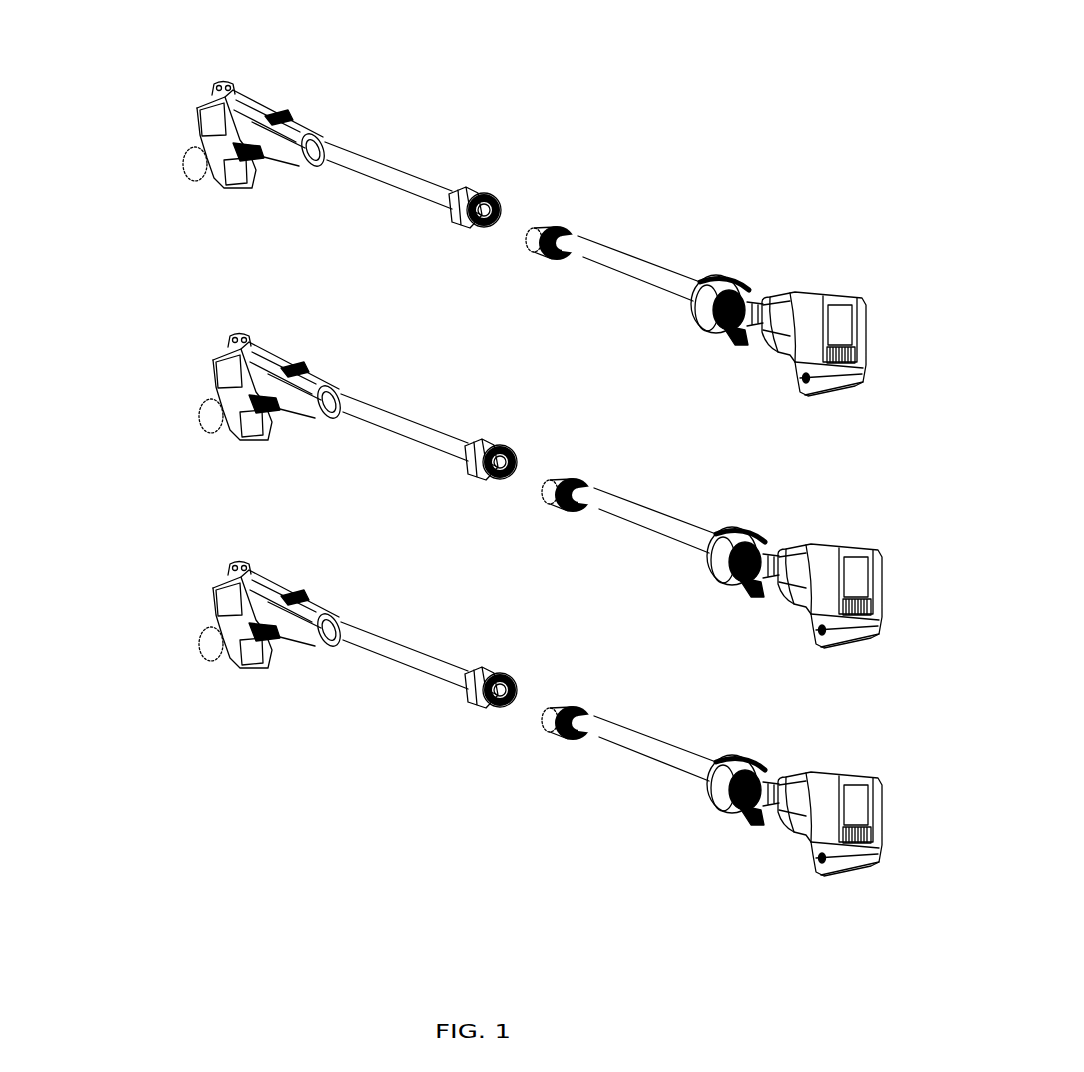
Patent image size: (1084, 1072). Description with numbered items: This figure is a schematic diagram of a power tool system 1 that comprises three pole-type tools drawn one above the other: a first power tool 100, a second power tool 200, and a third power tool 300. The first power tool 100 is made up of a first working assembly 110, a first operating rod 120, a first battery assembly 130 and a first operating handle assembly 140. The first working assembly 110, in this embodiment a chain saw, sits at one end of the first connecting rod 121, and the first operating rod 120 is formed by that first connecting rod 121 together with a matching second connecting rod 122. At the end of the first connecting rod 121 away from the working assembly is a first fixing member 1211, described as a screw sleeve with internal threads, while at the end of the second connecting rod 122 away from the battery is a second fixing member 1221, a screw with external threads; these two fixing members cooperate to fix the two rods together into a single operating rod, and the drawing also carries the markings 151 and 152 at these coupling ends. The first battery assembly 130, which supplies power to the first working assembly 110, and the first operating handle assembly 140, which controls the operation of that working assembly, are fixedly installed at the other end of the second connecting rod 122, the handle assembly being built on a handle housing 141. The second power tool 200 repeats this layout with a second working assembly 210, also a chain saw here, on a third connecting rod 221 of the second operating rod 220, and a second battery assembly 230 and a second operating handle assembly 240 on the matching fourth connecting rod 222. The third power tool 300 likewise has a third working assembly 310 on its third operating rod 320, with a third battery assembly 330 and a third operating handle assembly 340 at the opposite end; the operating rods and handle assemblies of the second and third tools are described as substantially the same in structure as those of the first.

The power tool system 1 is at (543, 60).
The first power tool 100 is at (160, 120).
The first working assembly 110 is at (270, 104).
The first operating rod 120 is at (457, 193).
The first connecting rod 121 is at (347, 160).
The second connecting rod 122 is at (612, 262).
The first fixing member 1211 is at (480, 196).
The second fixing member 1221 is at (552, 228).
The first connector 151 is at (546, 407).
The second connector 152 is at (634, 432).
The first battery assembly 130 is at (816, 292).
The first operating handle assembly 140 is at (722, 290).
The handle housing 141 is at (698, 283).
The second power tool 200 is at (160, 370).
The second working assembly 210 is at (276, 352).
The second operating rod 220 is at (416, 430).
The third connecting rod 221 is at (358, 417).
The fourth connecting rod 222 is at (620, 513).
The second battery assembly 230 is at (818, 548).
The second operating handle assembly 240 is at (737, 527).
The third power tool 300 is at (160, 605).
The third working assembly 310 is at (266, 583).
The third operating rod 320 is at (403, 645).
The third battery assembly 330 is at (840, 780).
The third operating handle assembly 340 is at (728, 757).